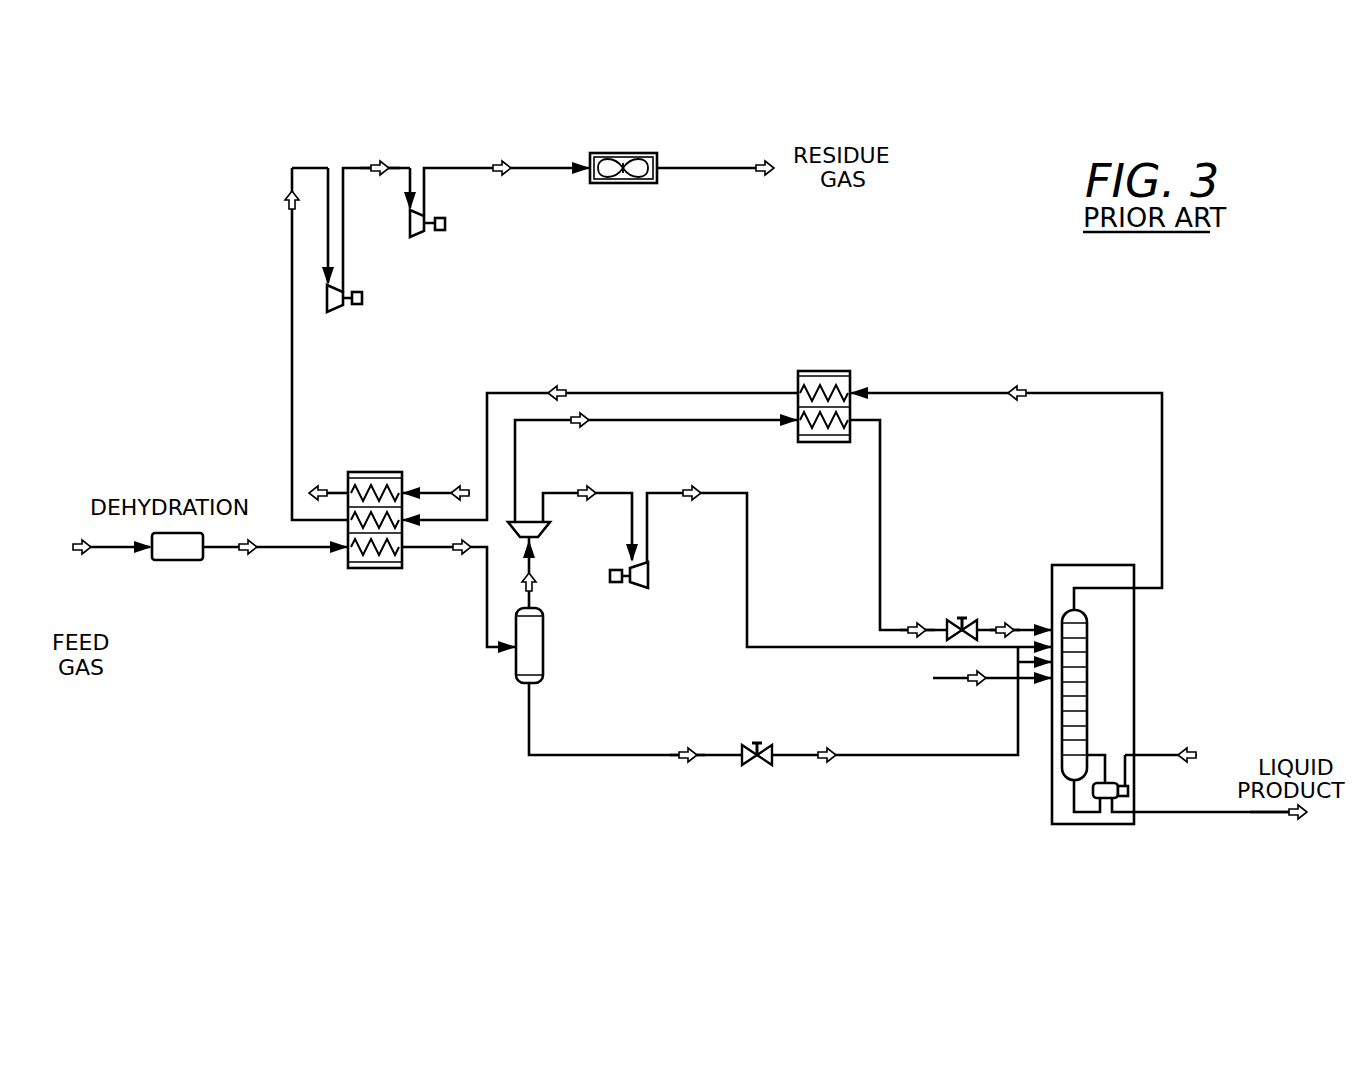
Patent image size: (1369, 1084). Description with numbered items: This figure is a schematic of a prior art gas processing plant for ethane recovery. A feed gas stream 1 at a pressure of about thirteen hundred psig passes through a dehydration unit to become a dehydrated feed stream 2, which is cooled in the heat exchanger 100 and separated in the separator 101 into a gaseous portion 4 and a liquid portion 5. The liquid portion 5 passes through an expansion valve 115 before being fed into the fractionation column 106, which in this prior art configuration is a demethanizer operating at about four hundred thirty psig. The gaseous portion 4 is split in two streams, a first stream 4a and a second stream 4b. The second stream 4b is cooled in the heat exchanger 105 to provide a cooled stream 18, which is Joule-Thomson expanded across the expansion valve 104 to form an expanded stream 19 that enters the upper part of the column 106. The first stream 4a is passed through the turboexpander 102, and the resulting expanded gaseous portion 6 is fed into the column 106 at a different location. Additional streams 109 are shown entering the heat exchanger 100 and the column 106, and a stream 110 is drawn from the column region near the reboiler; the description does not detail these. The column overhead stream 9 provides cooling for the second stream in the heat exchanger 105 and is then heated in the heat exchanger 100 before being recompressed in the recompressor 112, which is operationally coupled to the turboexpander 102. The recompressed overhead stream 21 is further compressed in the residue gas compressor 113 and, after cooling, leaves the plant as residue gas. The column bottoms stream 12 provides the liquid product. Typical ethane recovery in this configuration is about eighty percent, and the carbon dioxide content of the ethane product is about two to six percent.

The feed gas stream 1 is at (82, 557).
The dehydrated feed gas stream 2 is at (248, 557).
The gaseous portion 4 is at (536, 583).
The first vapor portion 4a is at (585, 486).
The second vapor portion 4b is at (580, 428).
The liquid portion 5 is at (688, 745).
The expanded gaseous portion 6 is at (690, 486).
The overhead stream 9 is at (1020, 385).
The bottoms stream 12 is at (1293, 825).
The cooled vapor stream 18 is at (917, 622).
The reflux stream 19 is at (1005, 622).
The recompressed overhead stream 21 is at (378, 160).
The heat exchanger 100 is at (370, 572).
The separator 101 is at (546, 645).
The turboexpander 102 is at (632, 590).
The expansion valve 104 is at (962, 618).
The heat exchanger 105 is at (830, 445).
The de-ethanizer 106 is at (1089, 826).
The refrigerant / reflux stream 109 is at (461, 487).
The column bottoms stream 110 is at (1186, 745).
The recompressor 112 is at (335, 313).
The residue gas compressor 113 is at (420, 238).
The expansion valve 115 is at (757, 740).